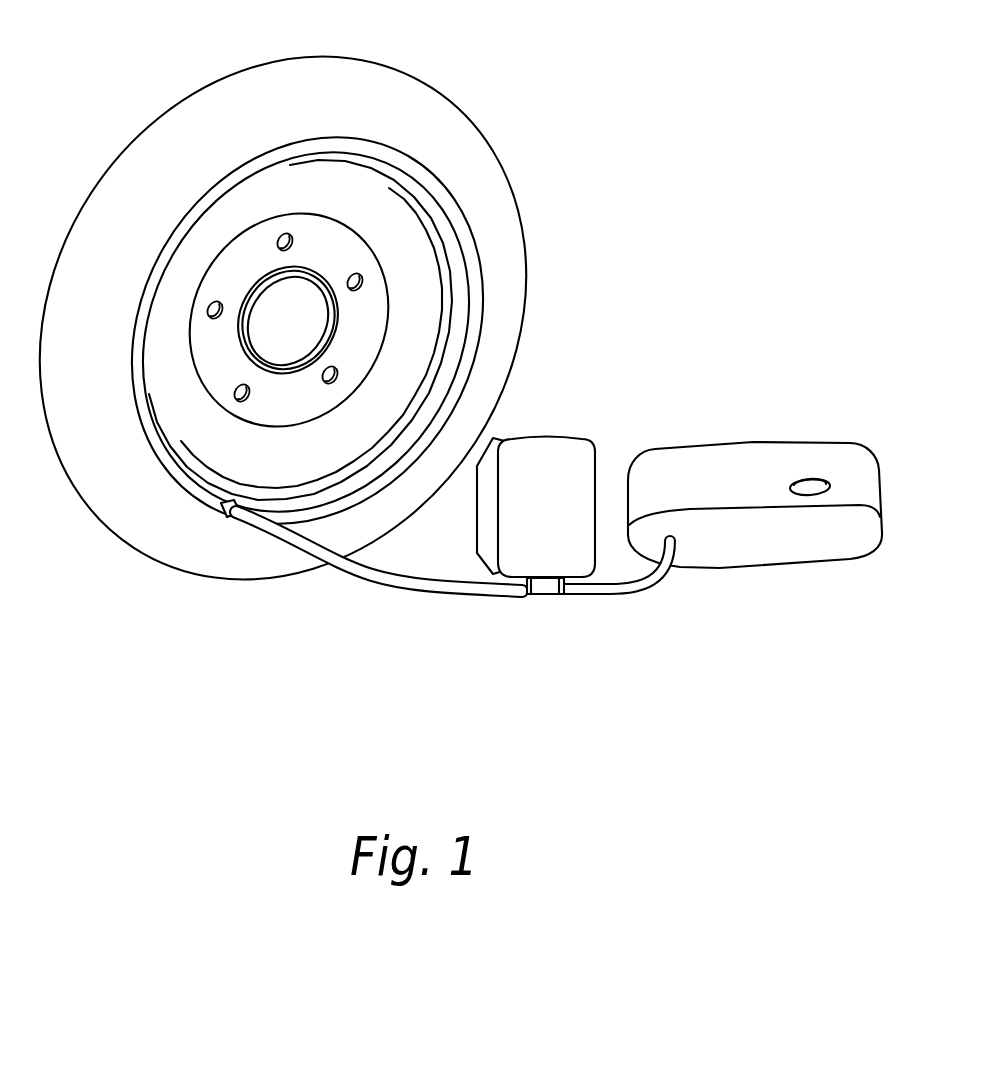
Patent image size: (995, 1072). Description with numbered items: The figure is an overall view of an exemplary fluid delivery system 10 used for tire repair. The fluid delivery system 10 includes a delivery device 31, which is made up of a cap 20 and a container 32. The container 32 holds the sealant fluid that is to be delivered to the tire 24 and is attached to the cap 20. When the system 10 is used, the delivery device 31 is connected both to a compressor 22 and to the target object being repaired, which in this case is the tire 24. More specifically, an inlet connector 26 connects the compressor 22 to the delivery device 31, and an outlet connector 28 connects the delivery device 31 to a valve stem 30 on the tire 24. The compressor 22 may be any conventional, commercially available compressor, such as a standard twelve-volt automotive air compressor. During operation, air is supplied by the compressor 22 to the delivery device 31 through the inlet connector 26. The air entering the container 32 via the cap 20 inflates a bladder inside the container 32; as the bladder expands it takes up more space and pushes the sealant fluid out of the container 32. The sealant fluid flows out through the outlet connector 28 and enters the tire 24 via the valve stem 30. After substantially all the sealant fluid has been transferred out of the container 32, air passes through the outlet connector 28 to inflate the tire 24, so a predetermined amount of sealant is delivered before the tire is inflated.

The fluid delivery system 10 is at (688, 190).
The cap 20 is at (540, 603).
The compressor 22 is at (763, 537).
The tire 24 is at (468, 190).
The inlet connector 26 is at (622, 597).
The outlet connector 28 is at (353, 577).
The valve stem 30 is at (222, 511).
The delivery device 31 is at (475, 518).
The container 32 is at (560, 427).